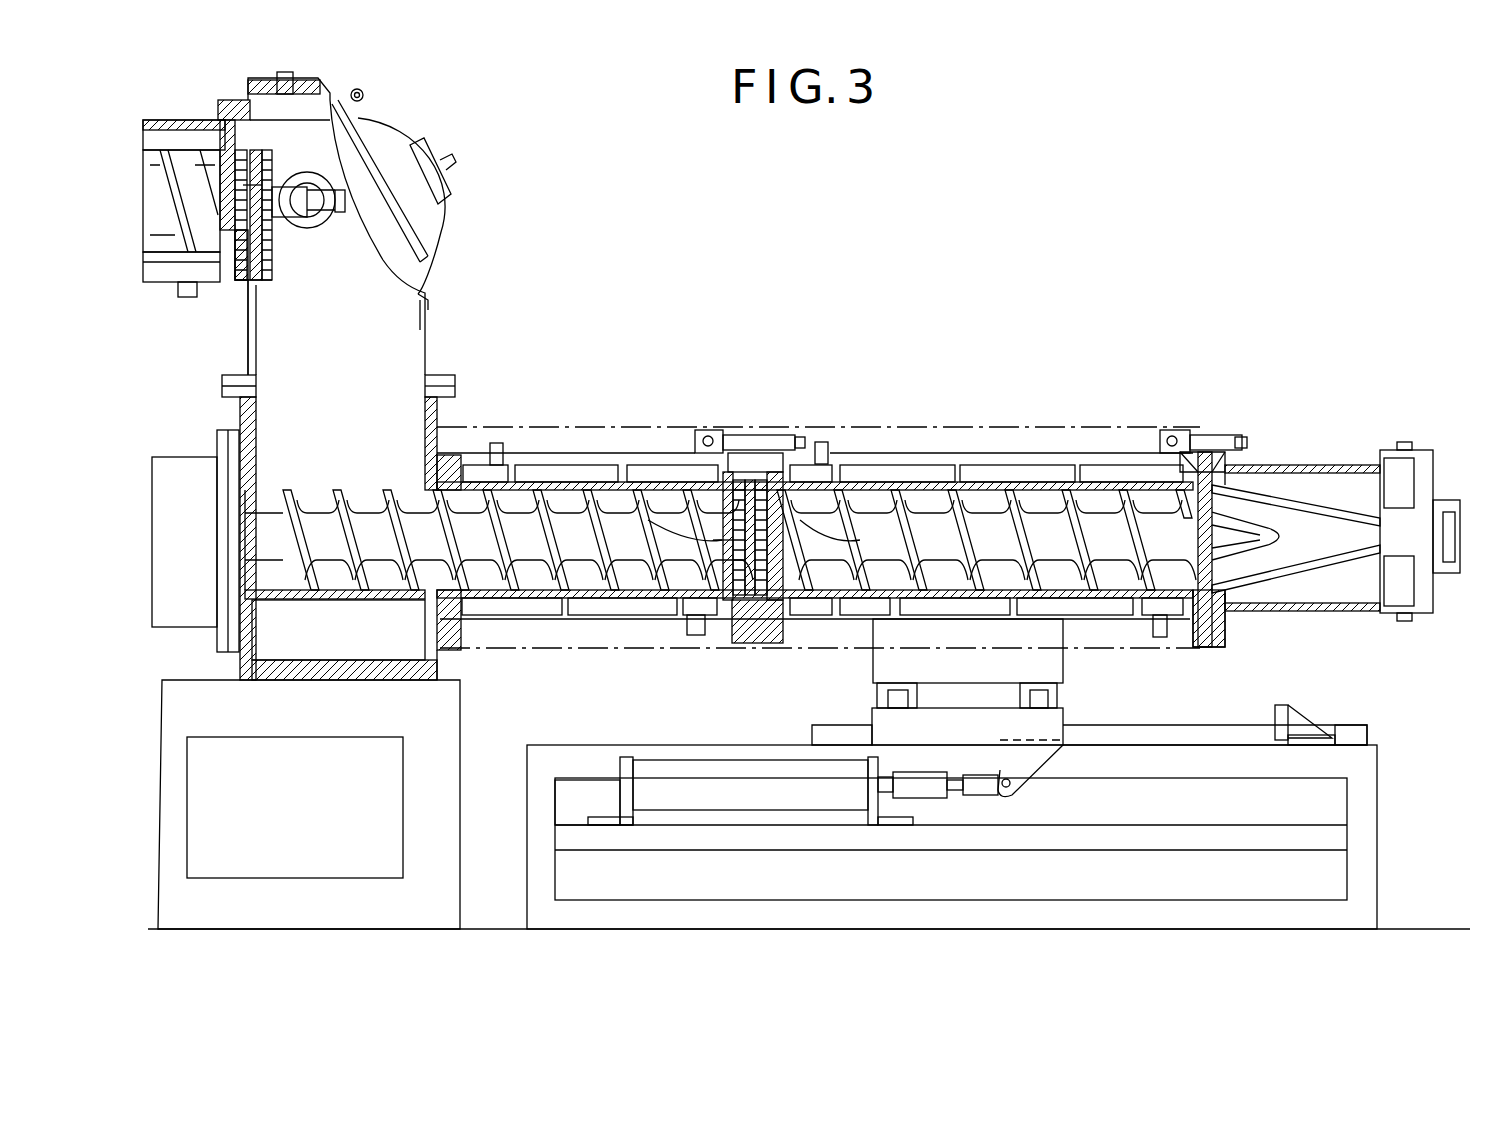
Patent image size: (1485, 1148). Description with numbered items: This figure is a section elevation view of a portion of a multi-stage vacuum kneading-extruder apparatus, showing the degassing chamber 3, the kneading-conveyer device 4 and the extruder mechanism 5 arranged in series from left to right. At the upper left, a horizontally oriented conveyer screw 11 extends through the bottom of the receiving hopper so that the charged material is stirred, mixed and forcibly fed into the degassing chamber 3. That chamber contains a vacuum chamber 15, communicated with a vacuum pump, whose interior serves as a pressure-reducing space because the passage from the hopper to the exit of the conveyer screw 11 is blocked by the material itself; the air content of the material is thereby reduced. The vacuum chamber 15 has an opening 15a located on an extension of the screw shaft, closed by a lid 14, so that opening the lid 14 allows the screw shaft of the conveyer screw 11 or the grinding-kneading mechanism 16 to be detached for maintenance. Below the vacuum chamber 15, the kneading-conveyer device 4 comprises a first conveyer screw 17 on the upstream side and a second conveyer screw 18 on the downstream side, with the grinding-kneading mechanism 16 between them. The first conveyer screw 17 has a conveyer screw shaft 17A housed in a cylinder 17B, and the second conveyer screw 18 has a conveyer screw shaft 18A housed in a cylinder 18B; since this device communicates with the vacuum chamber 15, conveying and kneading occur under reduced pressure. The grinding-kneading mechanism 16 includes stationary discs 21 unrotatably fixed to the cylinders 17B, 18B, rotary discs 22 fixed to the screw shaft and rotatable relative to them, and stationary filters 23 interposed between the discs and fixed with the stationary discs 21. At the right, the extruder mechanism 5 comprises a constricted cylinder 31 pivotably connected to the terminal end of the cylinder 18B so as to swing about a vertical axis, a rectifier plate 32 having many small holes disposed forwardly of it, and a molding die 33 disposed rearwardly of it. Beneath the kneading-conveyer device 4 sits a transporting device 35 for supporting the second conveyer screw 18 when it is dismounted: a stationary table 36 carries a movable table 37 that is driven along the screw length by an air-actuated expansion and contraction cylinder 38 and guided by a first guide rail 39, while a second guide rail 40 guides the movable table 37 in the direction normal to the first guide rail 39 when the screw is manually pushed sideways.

The degassing chamber 3 is at (421, 125).
The kneading-conveyer device 4 is at (1100, 332).
The extruder mechanism 5 is at (1270, 387).
The conveyer screw 11 is at (190, 215).
The lid 14 is at (445, 219).
The vacuum chamber 15 is at (380, 338).
The opening 15a is at (426, 247).
The grinding-kneading mechanism 16 is at (287, 226).
The first conveyer screw 17 is at (601, 500).
The conveyer screw shaft 17A is at (553, 466).
The cylinder 17B is at (640, 468).
The second conveyer screw 18 is at (970, 500).
The conveyer screw shaft 18A is at (1035, 530).
The cylinder 18B is at (935, 466).
The stationary discs 21 is at (260, 170).
The rotary discs 22 is at (262, 268).
The stationary filters 23 is at (242, 183).
The constricted cylinder 31 is at (1305, 492).
The rectifier plate 32 is at (1242, 582).
The molding die 33 is at (1438, 522).
The transporting device 35 is at (1090, 690).
The stationary table 36 is at (567, 748).
The movable table 37 is at (1063, 660).
The expansion and contraction cylinder 38 is at (687, 768).
The first guide rail 39 is at (1250, 738).
The second guide rail 40 is at (1040, 690).